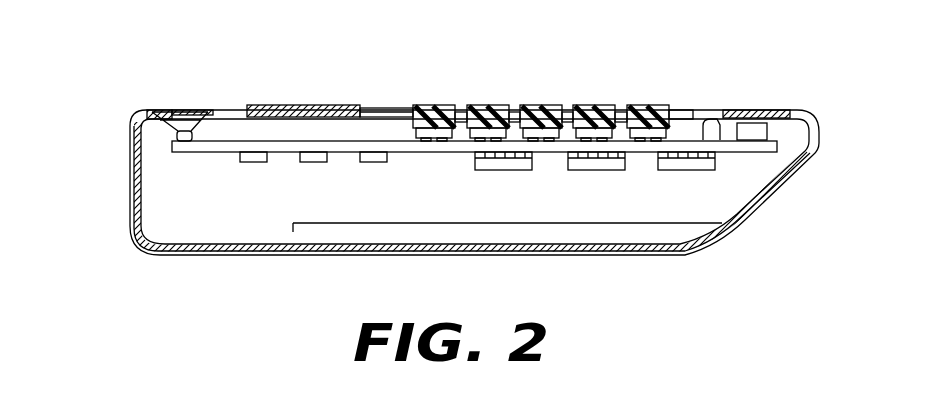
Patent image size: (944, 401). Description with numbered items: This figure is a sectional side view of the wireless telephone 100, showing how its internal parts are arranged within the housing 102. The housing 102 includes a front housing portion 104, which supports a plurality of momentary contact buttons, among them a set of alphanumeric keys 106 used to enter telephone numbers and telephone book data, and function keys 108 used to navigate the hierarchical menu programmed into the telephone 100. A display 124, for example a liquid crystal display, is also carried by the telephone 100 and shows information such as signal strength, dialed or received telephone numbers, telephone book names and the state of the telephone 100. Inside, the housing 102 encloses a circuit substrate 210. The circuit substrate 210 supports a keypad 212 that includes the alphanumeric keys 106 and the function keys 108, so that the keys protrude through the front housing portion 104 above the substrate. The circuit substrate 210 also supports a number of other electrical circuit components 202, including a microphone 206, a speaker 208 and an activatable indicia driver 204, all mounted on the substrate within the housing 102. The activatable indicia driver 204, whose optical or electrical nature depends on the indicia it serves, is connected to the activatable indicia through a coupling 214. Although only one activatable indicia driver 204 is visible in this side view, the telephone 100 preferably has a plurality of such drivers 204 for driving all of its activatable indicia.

The wireless telephone 100 is at (784, 313).
The housing 102 is at (134, 192).
The front housing portion 104 is at (388, 110).
The alphanumeric keys 106 is at (495, 103).
The function keys 108 is at (433, 106).
The display 124 is at (290, 108).
The electrical circuit components 202 is at (362, 165).
The activatable indicia driver 204 is at (723, 117).
The microphone 206 is at (768, 117).
The speaker 208 is at (175, 134).
The circuit substrate 210 is at (214, 148).
The keypad 212 is at (570, 108).
The coupling 214 is at (717, 108).